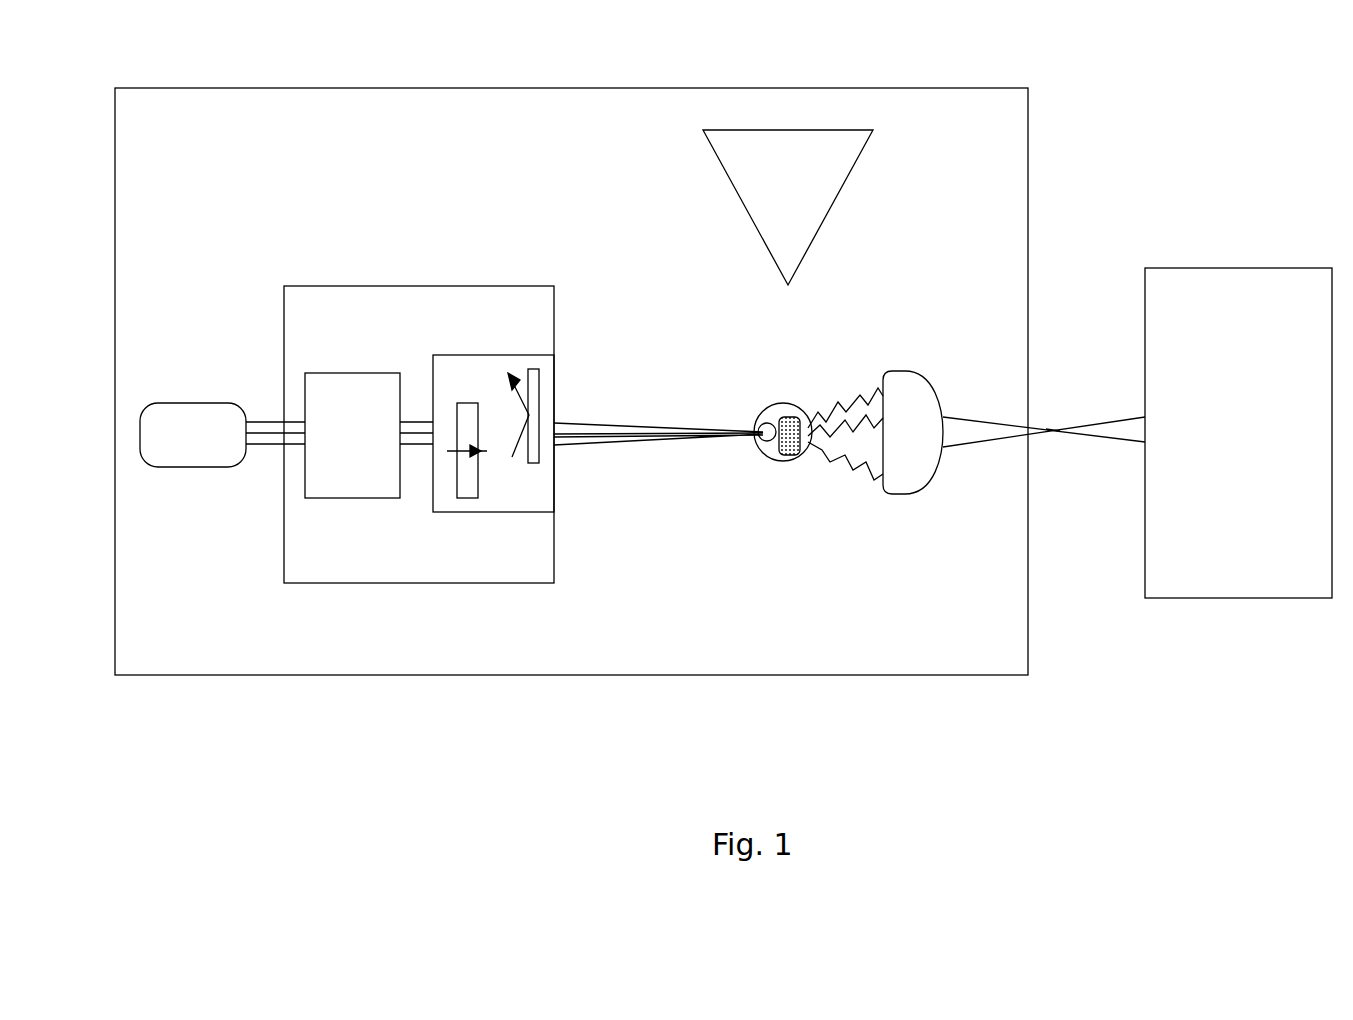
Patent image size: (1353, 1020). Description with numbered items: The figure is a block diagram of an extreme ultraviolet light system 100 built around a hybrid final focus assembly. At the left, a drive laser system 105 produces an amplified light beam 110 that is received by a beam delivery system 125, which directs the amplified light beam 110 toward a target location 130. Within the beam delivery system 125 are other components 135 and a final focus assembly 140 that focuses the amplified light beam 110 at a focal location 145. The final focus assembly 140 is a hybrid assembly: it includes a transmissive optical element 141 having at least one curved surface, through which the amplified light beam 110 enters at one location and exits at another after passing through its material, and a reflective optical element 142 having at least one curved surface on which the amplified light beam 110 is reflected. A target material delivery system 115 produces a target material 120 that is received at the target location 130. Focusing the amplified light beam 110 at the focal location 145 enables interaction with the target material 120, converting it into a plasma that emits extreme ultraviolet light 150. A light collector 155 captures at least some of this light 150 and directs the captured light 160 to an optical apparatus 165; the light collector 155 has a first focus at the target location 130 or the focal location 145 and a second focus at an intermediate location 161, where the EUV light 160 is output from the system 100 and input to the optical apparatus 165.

The extreme ultraviolet light system 100 is at (323, 88).
The drive laser system 105 is at (193, 435).
The amplified light beam 110 is at (262, 445).
The target material delivery system 115 is at (857, 159).
The target material 120 is at (787, 455).
The beam delivery system 125 is at (323, 286).
The target location 130 is at (796, 408).
The other components 135 is at (352, 435).
The final focus assembly 140 is at (465, 355).
The transmissive optical element 141 is at (480, 478).
The reflective optical element 142 is at (540, 380).
The focal location 145 is at (770, 447).
The extreme ultraviolet light 150 is at (853, 478).
The light collector 155 is at (913, 432).
The captured light 160 is at (965, 447).
The intermediate location 161 is at (1054, 425).
The optical apparatus 165 is at (1238, 433).